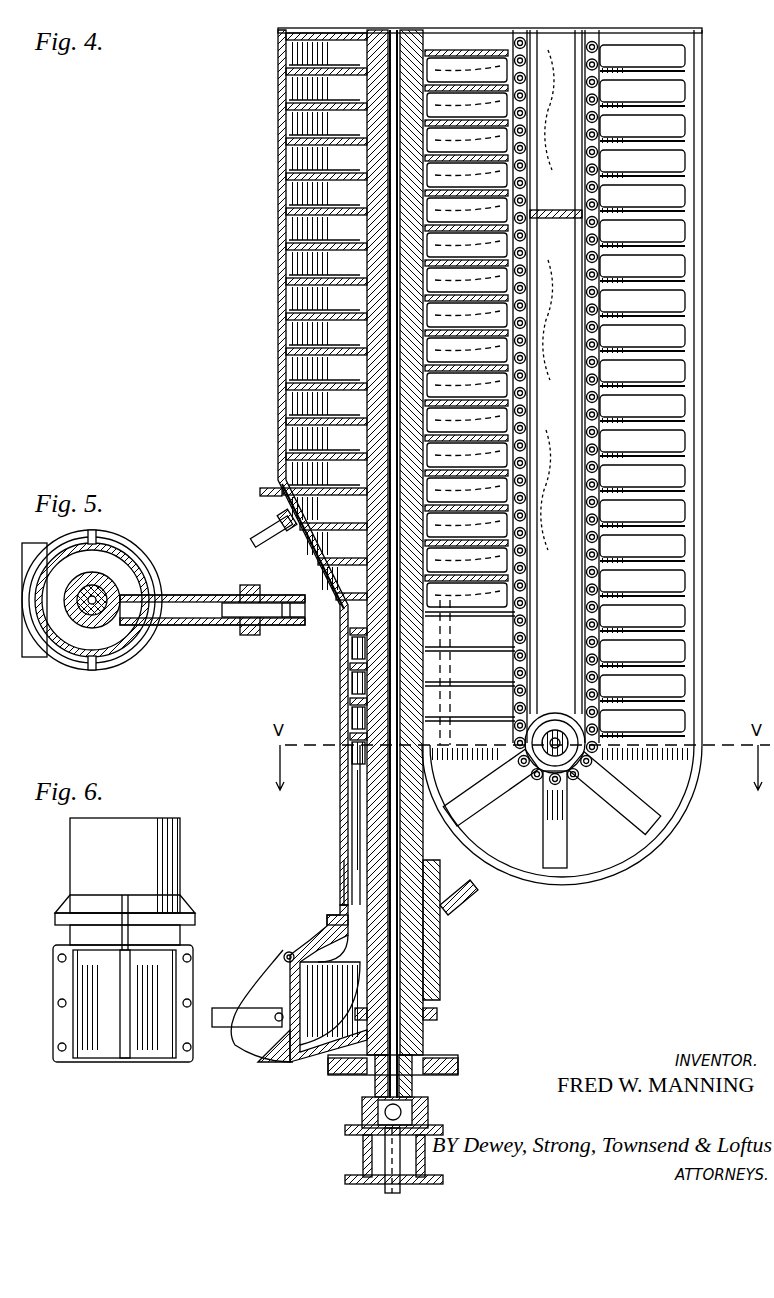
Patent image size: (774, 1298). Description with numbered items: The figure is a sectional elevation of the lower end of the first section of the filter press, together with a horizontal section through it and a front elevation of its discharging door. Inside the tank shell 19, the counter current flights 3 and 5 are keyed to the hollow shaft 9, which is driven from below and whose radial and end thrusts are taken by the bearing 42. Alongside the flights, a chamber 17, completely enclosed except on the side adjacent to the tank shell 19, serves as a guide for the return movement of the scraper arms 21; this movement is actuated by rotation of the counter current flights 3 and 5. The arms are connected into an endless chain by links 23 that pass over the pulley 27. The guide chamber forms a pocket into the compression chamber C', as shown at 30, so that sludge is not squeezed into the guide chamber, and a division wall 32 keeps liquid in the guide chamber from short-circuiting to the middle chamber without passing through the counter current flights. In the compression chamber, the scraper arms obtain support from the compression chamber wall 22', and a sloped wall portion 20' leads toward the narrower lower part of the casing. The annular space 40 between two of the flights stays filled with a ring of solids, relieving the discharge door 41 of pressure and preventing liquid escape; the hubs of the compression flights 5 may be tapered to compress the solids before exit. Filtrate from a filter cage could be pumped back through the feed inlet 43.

In FIG. 4, the tank shell 19 is at (280, 128).
In FIG. 4, the counter current flights 3 is at (280, 283).
In FIG. 4, the hollow shaft 9 is at (286, 365).
In FIG. 4, the feed inlet 43 is at (254, 540).
In FIG. 4, the inclined wall section 20' is at (309, 546).
In FIG. 4, the counter current flights 5 is at (346, 660).
In FIG. 4, the compression chamber C' is at (330, 825).
In FIG. 4, the annular space 40 is at (355, 812).
In FIG. 4, the compression chamber wall 22' is at (307, 882).
In FIG. 4, the discharge door 41 is at (281, 1063).
In FIG. 4, the bearing 42 is at (362, 1108).
In FIG. 4, the division wall 32 is at (553, 212).
In FIG. 4, the scraper arms 21 is at (702, 285).
In FIG. 4, the links 23 is at (590, 540).
In FIG. 4, the chamber 17 is at (702, 487).
In FIG. 4, the pulley 27 is at (555, 713).
In FIG. 4, the pocket 30 is at (443, 795).
In FIG. 5, the pocket 30 is at (126, 603).